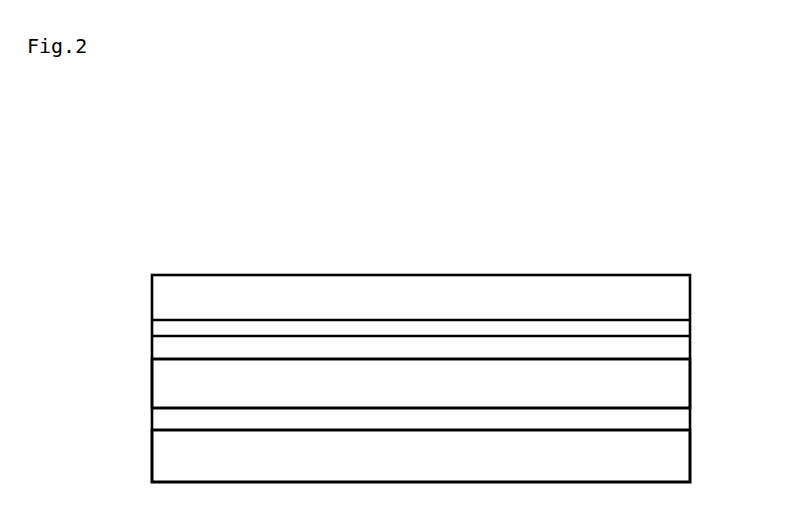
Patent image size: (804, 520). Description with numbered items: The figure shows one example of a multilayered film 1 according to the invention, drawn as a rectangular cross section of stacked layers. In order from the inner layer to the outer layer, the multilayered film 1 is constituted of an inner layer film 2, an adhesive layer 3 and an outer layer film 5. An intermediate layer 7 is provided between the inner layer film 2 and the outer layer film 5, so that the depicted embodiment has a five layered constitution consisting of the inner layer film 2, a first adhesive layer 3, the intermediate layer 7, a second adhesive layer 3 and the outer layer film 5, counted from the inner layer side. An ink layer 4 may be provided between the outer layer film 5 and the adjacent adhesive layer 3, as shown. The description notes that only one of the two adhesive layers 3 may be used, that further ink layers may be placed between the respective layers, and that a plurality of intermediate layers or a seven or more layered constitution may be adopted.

The multilayered film 1 is at (528, 228).
The inner layer film 2 is at (668, 442).
The adhesive layer 3 is at (162, 347).
The ink layer 4 is at (682, 328).
The outer layer film 5 is at (666, 305).
The intermediate layer 7 is at (678, 386).